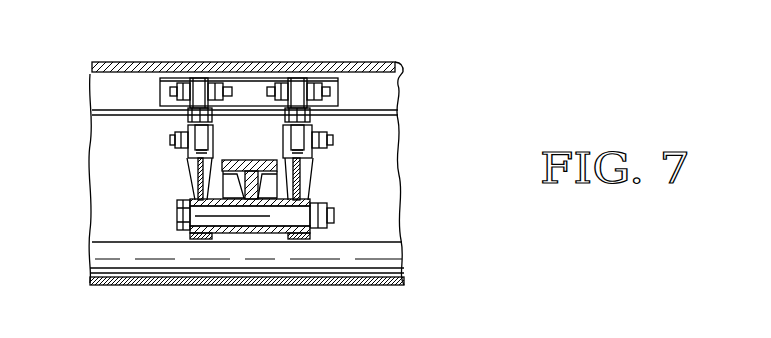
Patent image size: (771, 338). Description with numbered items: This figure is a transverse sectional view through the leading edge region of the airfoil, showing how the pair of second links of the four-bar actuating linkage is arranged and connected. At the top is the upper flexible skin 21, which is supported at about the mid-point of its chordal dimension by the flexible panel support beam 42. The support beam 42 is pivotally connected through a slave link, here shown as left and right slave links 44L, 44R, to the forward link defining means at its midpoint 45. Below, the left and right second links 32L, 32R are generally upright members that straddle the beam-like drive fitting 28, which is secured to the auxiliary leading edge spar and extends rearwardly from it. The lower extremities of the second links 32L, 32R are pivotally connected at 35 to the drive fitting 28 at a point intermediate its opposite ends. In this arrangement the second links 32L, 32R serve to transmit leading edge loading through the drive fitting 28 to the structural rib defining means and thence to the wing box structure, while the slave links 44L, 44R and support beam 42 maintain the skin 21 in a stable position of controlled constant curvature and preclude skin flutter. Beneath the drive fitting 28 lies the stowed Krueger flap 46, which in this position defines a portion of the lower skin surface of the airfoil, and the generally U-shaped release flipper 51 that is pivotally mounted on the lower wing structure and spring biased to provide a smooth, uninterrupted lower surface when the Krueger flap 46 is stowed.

The upper flexible skin 21 is at (347, 62).
The flexible panel support beam 42 is at (394, 87).
The left slave link 44L is at (200, 80).
The right slave link 44R is at (297, 80).
The midpoint pivot of second link 45 is at (333, 142).
The left second link 32L is at (190, 172).
The right second link 32R is at (312, 172).
The drive fitting 28 is at (250, 152).
The pivot connection 35 is at (335, 215).
The Krueger flap 46 is at (245, 257).
The release flipper 51 is at (312, 285).